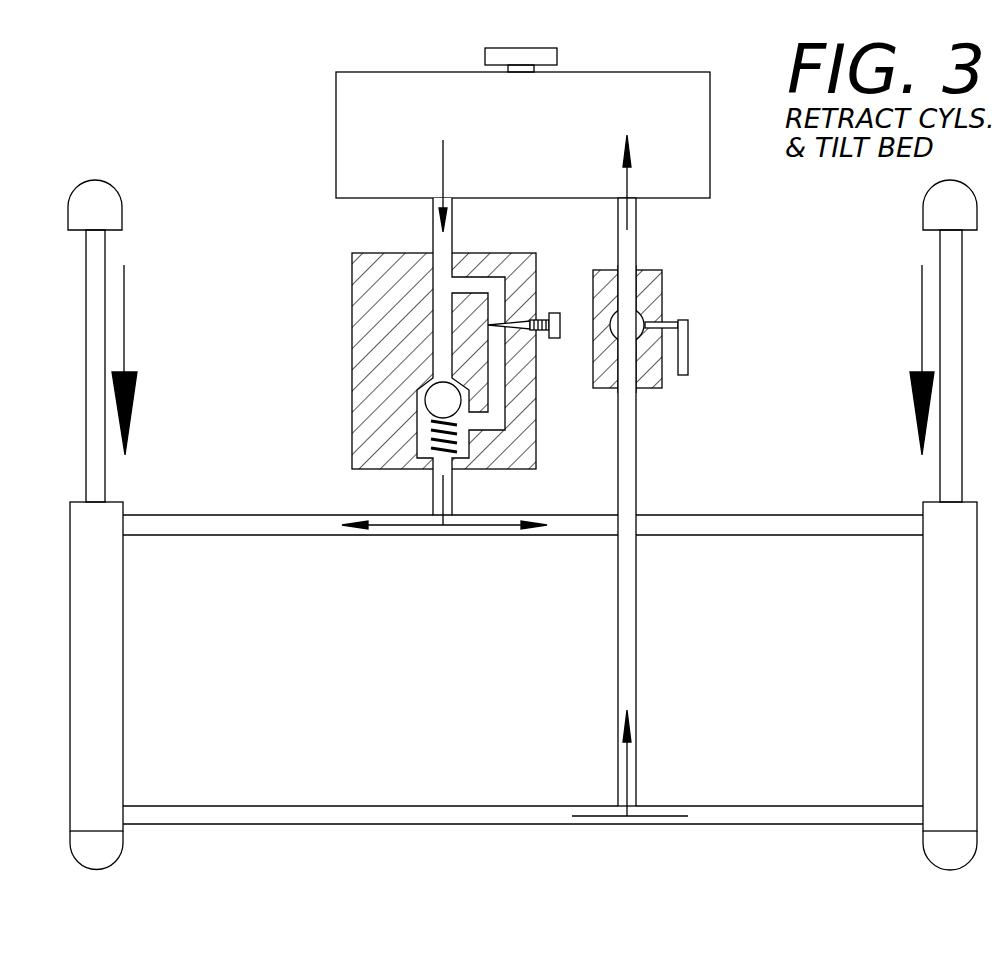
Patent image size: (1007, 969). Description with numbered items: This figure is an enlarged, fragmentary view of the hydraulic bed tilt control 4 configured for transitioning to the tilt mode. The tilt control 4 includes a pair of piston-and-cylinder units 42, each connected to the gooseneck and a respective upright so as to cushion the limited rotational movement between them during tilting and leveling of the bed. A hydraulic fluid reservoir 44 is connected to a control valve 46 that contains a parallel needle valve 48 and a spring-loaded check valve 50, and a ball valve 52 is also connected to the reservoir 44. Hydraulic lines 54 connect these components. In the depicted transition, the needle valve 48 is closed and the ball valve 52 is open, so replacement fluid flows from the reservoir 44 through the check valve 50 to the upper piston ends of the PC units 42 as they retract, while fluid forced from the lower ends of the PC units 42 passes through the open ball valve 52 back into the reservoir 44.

The hydraulic bed tilt control 4 is at (168, 128).
The piston-and-cylinder units 42 is at (123, 607).
The hydraulic fluid reservoir 44 is at (690, 111).
The control valve 46 is at (352, 256).
The needle valve 48 is at (558, 312).
The spring-loaded check valve 50 is at (428, 386).
The ball valve 52 is at (662, 272).
The hydraulic lines 54 is at (725, 537).